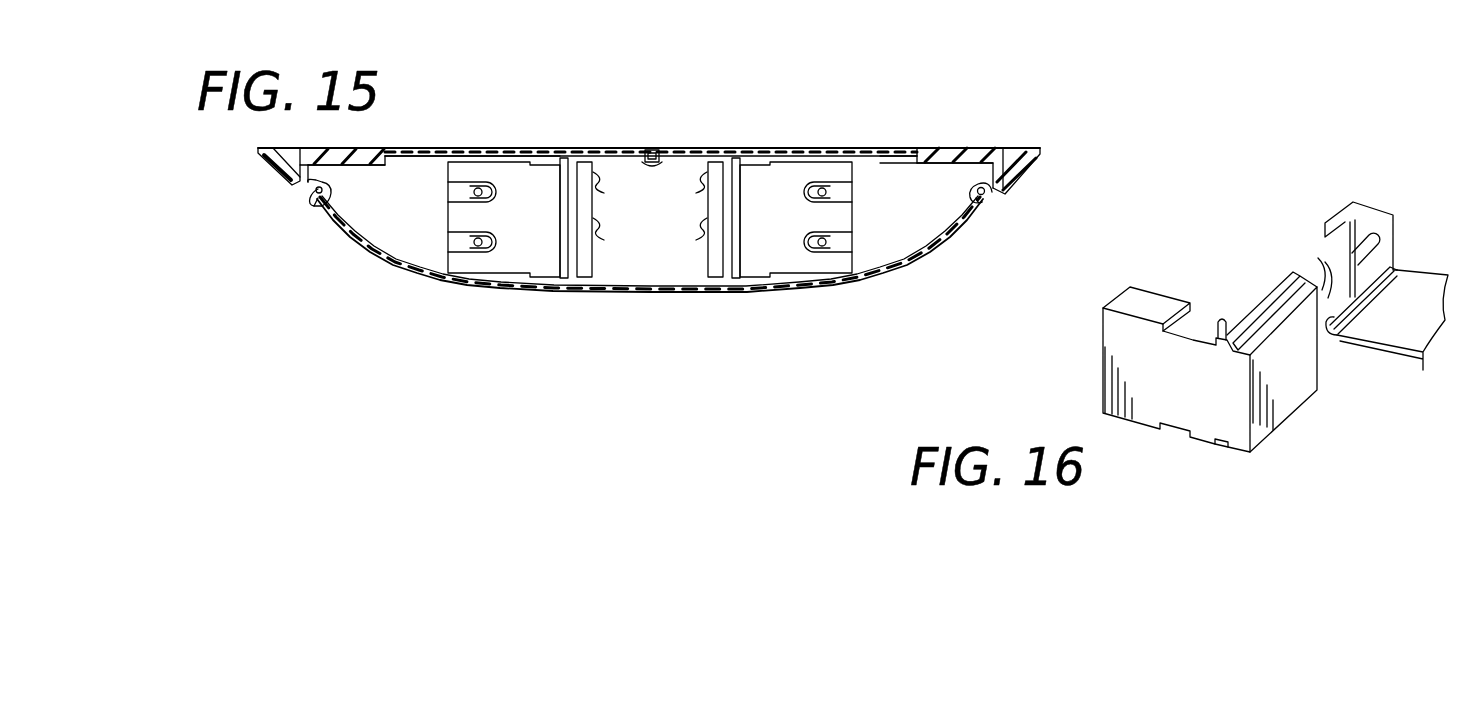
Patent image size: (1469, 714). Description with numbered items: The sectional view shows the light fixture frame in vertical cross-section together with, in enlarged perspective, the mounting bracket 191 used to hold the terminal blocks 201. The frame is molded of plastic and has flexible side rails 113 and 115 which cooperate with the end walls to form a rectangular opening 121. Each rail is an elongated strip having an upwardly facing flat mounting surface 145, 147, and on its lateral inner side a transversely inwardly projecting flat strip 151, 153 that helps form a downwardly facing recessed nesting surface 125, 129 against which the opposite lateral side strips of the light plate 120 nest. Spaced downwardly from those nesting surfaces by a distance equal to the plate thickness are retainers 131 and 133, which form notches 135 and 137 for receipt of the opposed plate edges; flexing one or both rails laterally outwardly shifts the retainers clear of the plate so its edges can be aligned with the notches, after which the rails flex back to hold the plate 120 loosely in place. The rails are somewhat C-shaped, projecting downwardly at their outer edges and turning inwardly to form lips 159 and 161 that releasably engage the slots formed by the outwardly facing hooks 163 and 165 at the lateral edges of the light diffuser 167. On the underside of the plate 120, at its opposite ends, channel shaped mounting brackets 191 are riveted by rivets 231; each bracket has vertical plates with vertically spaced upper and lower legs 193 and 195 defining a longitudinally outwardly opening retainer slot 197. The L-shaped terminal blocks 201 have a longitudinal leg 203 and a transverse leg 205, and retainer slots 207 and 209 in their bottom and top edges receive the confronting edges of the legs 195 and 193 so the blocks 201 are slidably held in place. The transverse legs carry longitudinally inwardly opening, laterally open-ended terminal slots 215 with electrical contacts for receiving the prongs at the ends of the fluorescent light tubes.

In FIG. 15, the side rail 113 is at (371, 142).
In FIG. 15, the side rail 115 is at (973, 142).
In FIG. 15, the light plate 120 is at (509, 146).
In FIG. 15, the rectangular opening 121 is at (433, 150).
In FIG. 15, the nesting surface 125 is at (424, 160).
In FIG. 15, the nesting surface 129 is at (898, 154).
In FIG. 15, the retainer 131 is at (386, 167).
In FIG. 15, the retainer 133 is at (912, 162).
In FIG. 15, the notch 135 is at (380, 146).
In FIG. 15, the notch 137 is at (930, 147).
In FIG. 15, the mounting surface 145 is at (325, 146).
In FIG. 15, the mounting surface 147 is at (998, 148).
In FIG. 15, the flat strip 151 is at (402, 147).
In FIG. 15, the flat strip 153 is at (898, 146).
In FIG. 15, the lip 159 is at (312, 193).
In FIG. 15, the lip 161 is at (1000, 184).
In FIG. 15, the hook 163 is at (320, 212).
In FIG. 15, the hook 165 is at (983, 200).
In FIG. 15, the light diffuser 167 is at (743, 293).
In FIG. 16, the mounting bracket 191 is at (1396, 348).
In FIG. 16, the upper leg 193 is at (1334, 336).
In FIG. 16, the lower leg 195 is at (1333, 218).
In FIG. 16, the retainer slot 197 is at (1335, 238).
In FIG. 15, the terminal block 201 is at (658, 216).
In FIG. 16, the terminal block 201 is at (1180, 367).
In FIG. 16, the longitudinal leg 203 is at (1275, 400).
In FIG. 15, the transverse leg 205 is at (500, 276).
In FIG. 16, the transverse leg 205 is at (1127, 387).
In FIG. 16, the retainer slot 207 is at (1222, 322).
In FIG. 16, the retainer slot 209 is at (1215, 447).
In FIG. 15, the terminal slot 215 is at (466, 243).
In FIG. 15, the rivet 231 is at (652, 148).